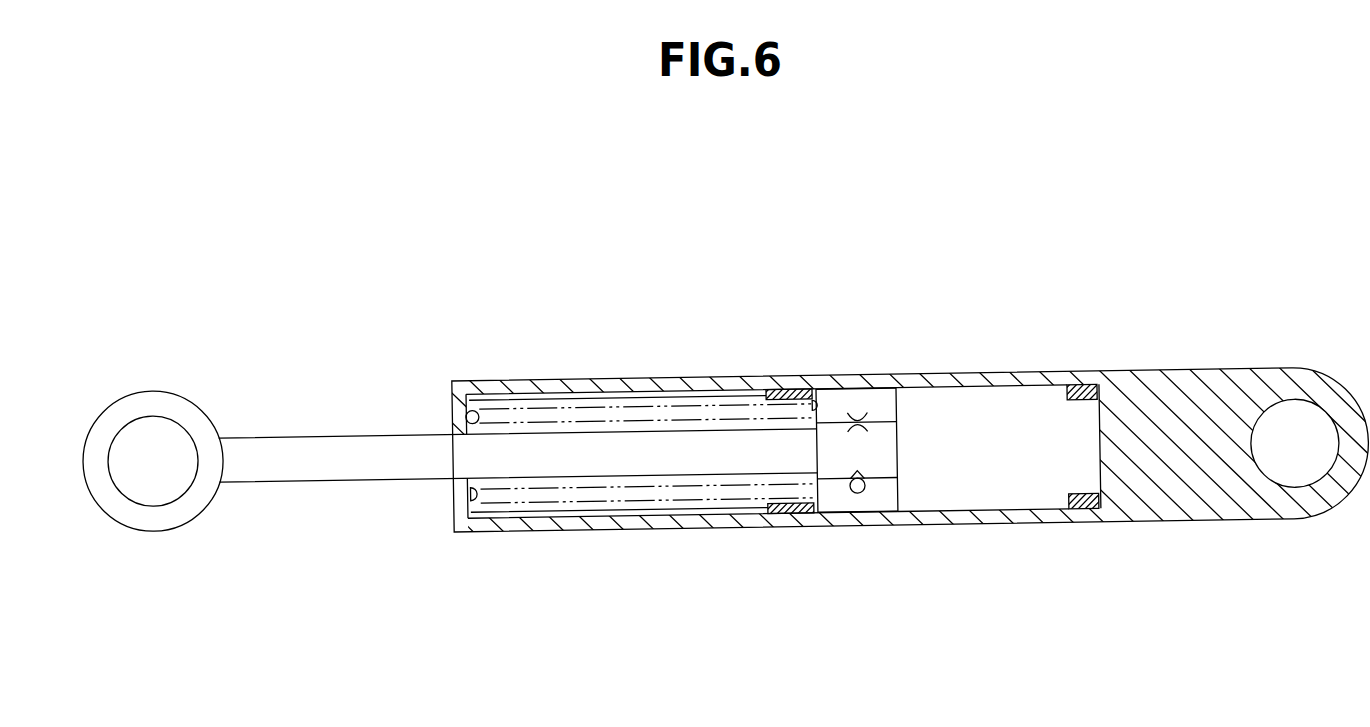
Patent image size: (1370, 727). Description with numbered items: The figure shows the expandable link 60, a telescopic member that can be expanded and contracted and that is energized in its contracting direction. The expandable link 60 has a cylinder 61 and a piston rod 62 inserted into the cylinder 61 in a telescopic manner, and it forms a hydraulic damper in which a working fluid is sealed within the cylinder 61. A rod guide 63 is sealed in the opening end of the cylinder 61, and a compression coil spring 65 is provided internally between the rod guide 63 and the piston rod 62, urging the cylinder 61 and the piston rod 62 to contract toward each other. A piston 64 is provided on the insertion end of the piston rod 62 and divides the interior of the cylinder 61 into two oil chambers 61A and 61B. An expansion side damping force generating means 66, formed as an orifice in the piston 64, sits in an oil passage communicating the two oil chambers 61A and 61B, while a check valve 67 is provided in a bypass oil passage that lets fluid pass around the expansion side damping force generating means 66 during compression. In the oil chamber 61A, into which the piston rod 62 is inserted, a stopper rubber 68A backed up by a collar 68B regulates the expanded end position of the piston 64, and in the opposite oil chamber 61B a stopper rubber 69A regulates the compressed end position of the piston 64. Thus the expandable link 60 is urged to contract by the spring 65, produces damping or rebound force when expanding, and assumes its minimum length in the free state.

The expandable link 60 is at (714, 352).
The cylinder 61 is at (1000, 372).
The oil chamber 61A is at (650, 502).
The oil chamber 61B is at (987, 492).
The piston rod 62 is at (328, 433).
The rod guide 63 is at (455, 489).
The piston 64 is at (882, 498).
The compression coil spring 65 is at (476, 410).
The expansion side damping force generating means 66 is at (858, 417).
The check valve 67 is at (853, 499).
The stopper rubber 68A is at (793, 513).
The collar 68B is at (548, 508).
The stopper rubber 69A is at (1088, 505).